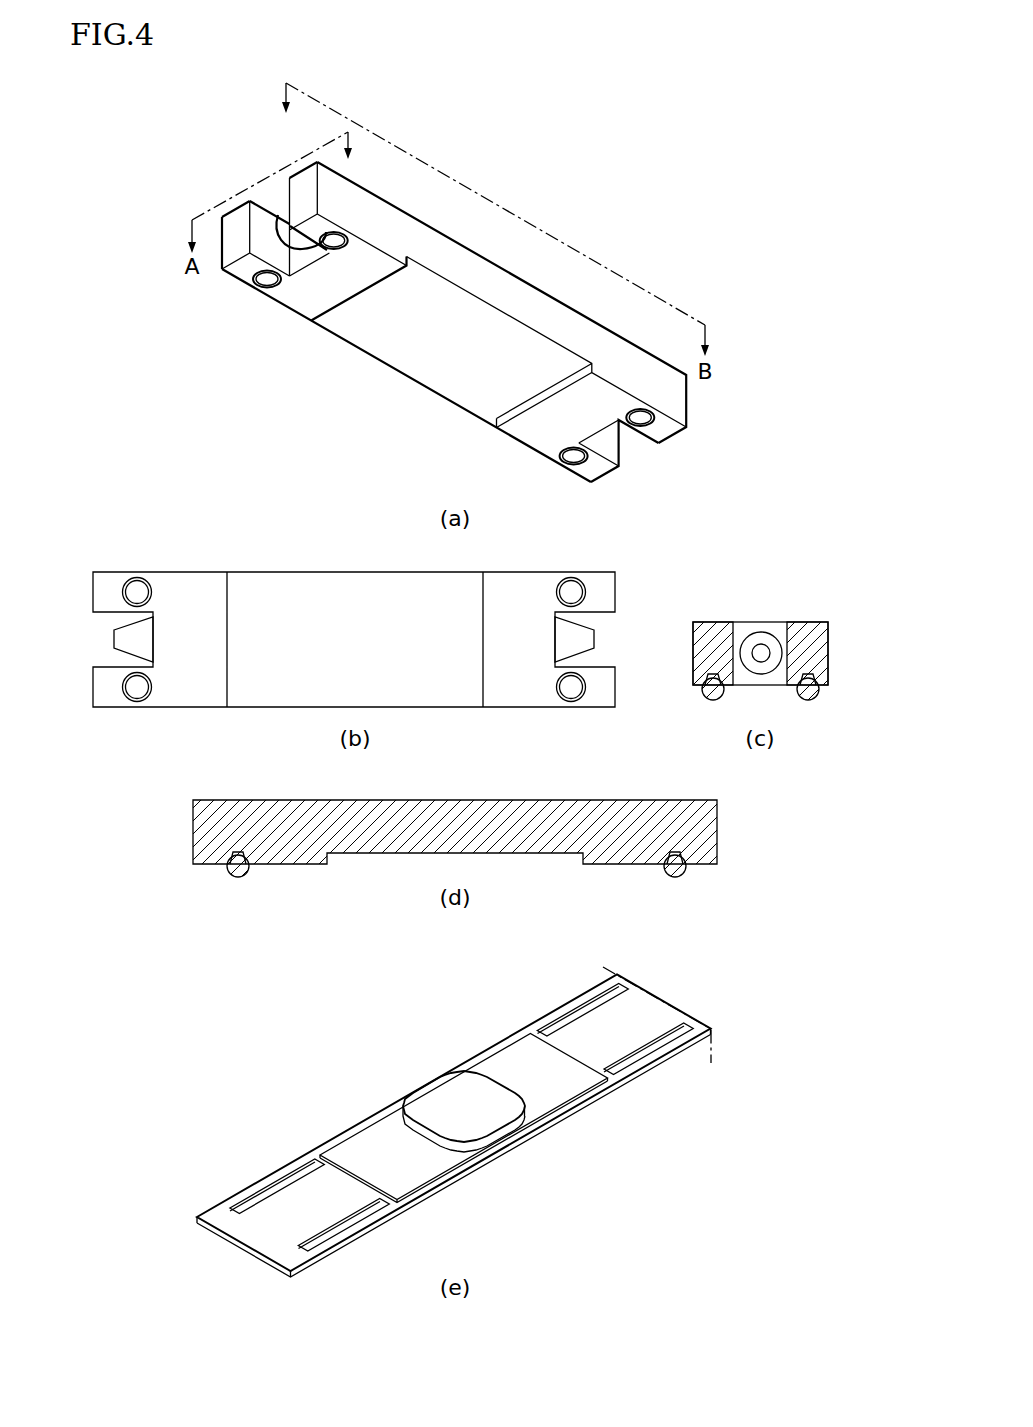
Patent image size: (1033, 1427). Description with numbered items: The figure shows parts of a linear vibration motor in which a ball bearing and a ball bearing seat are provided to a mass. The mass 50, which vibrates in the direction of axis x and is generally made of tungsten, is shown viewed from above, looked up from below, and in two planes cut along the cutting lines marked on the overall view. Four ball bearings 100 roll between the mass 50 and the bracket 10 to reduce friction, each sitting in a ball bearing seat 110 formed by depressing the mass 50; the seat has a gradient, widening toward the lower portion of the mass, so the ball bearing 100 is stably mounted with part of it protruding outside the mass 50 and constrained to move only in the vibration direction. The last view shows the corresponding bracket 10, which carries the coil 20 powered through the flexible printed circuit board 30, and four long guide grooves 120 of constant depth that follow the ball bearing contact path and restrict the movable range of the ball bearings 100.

The bracket 10 is at (407, 1102).
The coil 20 is at (498, 1138).
The flexible printed circuit board (FPCB) 30 is at (672, 1006).
The mass 50 is at (505, 265).
The ball bearing 100 is at (335, 236).
The ball bearing seat 110 is at (343, 247).
The ball bearing guide groove 120 is at (638, 1047).